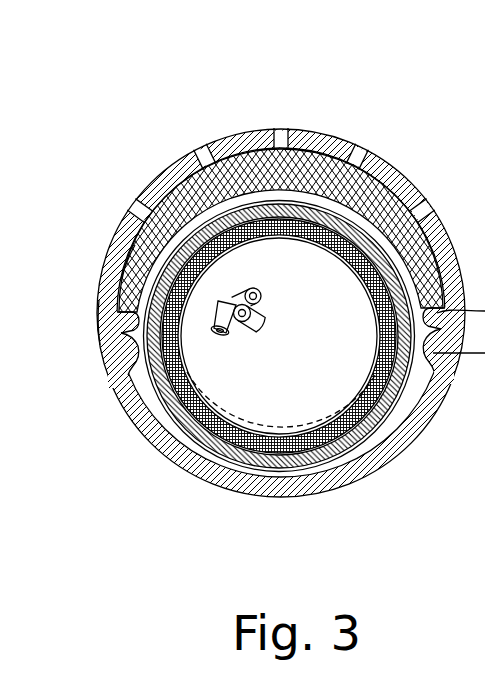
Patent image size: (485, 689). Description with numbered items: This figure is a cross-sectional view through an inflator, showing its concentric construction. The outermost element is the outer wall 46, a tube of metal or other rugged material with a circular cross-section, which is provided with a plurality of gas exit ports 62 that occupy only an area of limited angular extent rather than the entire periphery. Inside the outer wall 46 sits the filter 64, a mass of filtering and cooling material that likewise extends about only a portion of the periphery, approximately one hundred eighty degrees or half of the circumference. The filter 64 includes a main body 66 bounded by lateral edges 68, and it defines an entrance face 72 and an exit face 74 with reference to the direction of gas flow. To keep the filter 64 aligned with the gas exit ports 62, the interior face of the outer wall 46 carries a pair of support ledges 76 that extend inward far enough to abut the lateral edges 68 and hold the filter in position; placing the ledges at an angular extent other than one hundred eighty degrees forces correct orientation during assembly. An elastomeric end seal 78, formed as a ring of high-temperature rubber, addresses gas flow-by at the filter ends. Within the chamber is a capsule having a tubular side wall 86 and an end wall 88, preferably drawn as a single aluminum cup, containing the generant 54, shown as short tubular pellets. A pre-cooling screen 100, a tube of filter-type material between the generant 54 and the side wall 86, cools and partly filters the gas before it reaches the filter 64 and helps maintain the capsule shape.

The outer wall 46 is at (183, 470).
The gas generant material 54 is at (240, 326).
The gas exit ports 62 is at (372, 150).
The filter 64 is at (248, 130).
The main body 66 is at (238, 180).
The lateral edges 68 is at (101, 322).
The entrance face 72 is at (118, 290).
The exit face 74 is at (122, 240).
The support ledges 76 is at (122, 374).
The end seal 78 is at (392, 430).
The tubular side wall 86 is at (352, 452).
The end wall 88 is at (312, 380).
The pre-cooling screen 100 is at (362, 275).